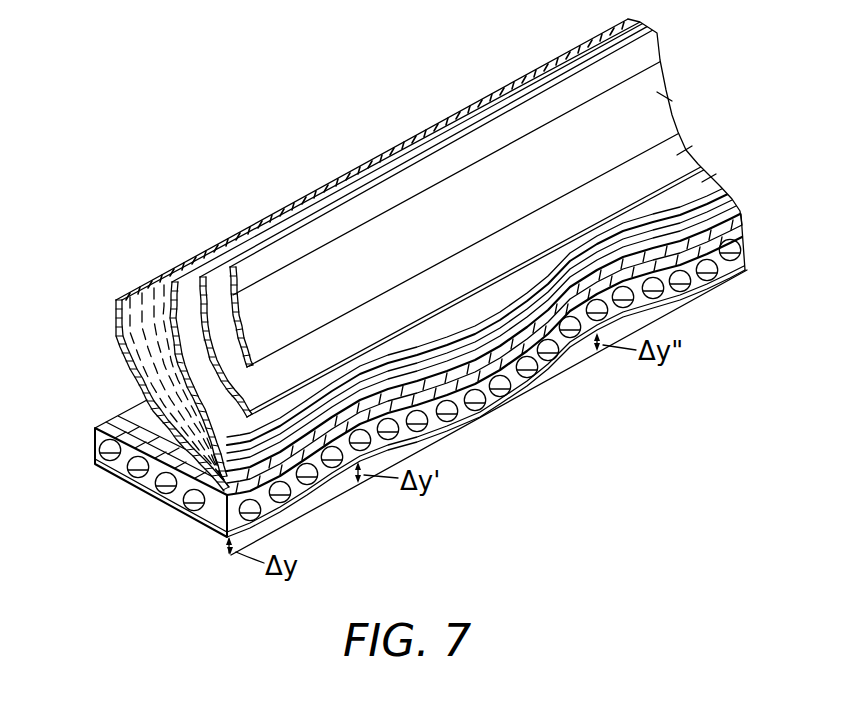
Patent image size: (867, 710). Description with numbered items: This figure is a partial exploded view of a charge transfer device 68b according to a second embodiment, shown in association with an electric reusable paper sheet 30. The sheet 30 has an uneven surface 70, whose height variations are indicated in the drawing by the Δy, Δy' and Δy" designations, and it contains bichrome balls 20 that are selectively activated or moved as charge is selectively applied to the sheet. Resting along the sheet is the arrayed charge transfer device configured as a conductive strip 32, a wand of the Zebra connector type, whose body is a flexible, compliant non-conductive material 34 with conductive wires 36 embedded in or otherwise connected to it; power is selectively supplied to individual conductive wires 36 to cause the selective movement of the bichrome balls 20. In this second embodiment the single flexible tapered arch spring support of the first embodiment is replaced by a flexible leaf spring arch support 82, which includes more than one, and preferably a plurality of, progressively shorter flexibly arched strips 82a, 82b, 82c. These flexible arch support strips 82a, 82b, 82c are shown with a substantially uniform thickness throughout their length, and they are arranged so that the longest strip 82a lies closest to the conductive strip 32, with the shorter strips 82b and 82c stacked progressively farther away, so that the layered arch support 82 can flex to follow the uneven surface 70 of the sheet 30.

The bichrome balls 20 is at (547, 378).
The electric reusable paper sheet 30 is at (112, 402).
The conductive strip 32 is at (112, 290).
The non-conductive material 34 is at (118, 328).
The conductive wires 36 is at (134, 312).
The charge transfer device 68b is at (370, 106).
The uneven surface 70 is at (302, 507).
The flexible leaf spring arch support 82 is at (812, 160).
The longest flexibly arched strip 82a is at (712, 177).
The flexibly arched strip 82b is at (690, 146).
The shortest flexibly arched strip 82c is at (672, 99).